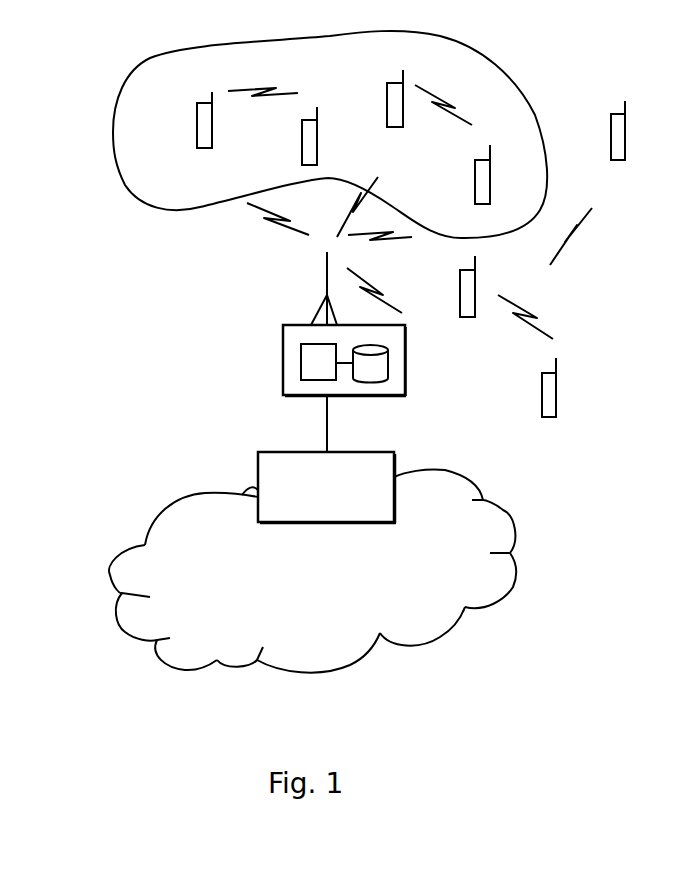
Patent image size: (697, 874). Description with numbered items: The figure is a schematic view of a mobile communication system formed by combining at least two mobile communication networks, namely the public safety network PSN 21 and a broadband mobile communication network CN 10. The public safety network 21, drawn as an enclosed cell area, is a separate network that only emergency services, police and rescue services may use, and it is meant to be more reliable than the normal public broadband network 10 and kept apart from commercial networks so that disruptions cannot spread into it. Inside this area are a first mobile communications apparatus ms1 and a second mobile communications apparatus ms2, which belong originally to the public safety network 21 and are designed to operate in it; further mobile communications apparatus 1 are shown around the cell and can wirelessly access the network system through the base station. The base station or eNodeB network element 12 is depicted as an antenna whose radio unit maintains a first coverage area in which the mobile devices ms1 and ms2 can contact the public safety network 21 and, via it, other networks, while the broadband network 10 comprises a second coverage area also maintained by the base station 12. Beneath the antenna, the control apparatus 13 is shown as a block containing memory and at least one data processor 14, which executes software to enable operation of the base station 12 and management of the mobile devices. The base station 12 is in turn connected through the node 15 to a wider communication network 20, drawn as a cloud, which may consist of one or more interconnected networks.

The mobile communications apparatus 1 is at (625, 140).
The mobile communication network CN 10 is at (170, 268).
The base station 12 is at (322, 289).
The control apparatus 13 is at (283, 344).
The data processor 14 is at (301, 363).
The node 15 is at (258, 472).
The communication network 20 is at (170, 528).
The public safety network PSN 21 is at (112, 131).
The first mobile communications apparatus MS1 ms1 is at (180, 122).
The second mobile communications apparatus MS2 ms2 is at (282, 136).